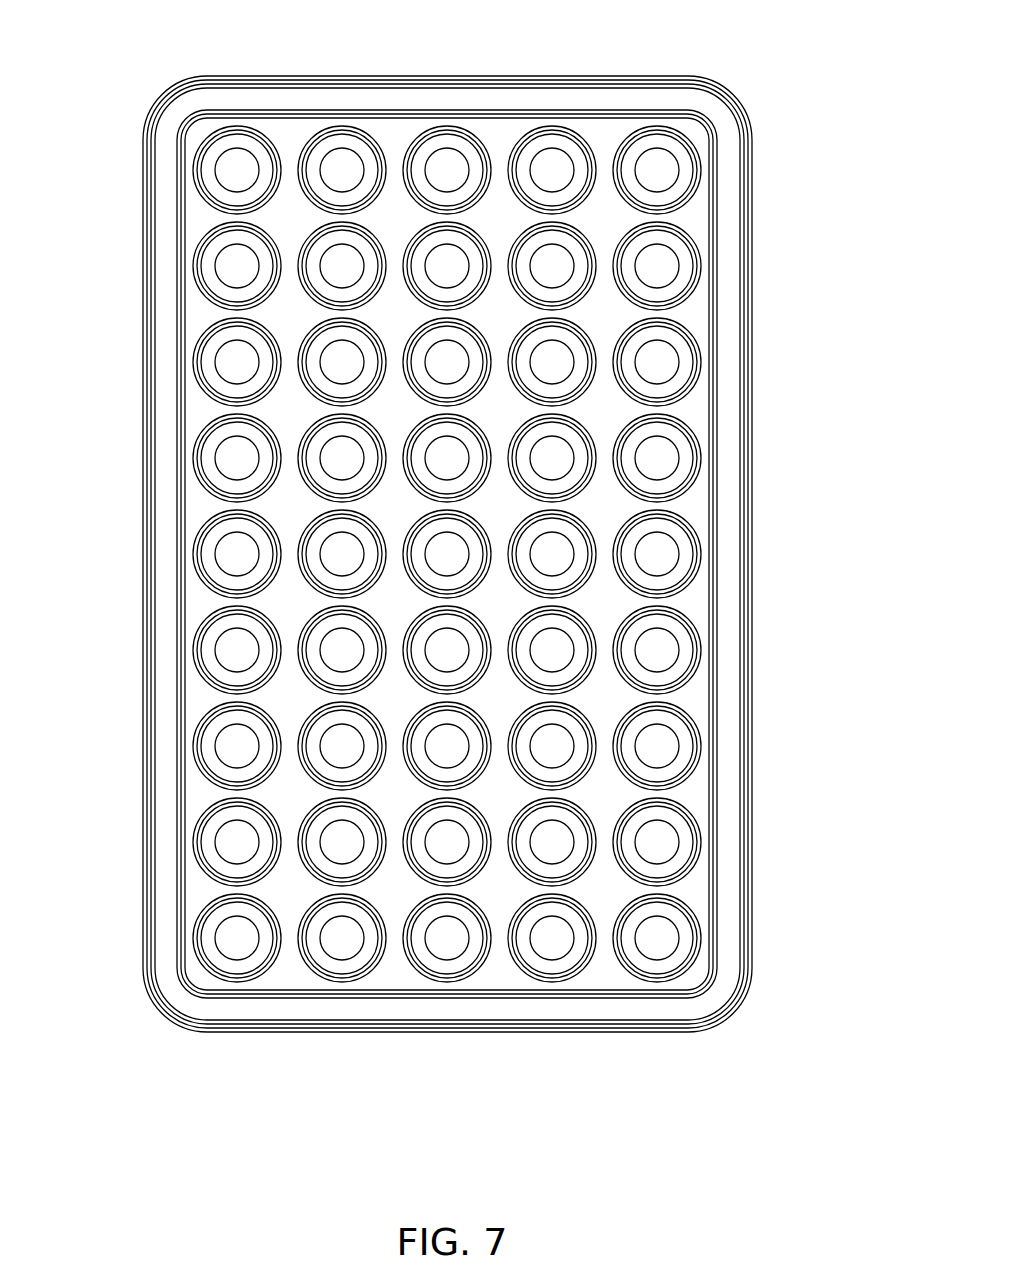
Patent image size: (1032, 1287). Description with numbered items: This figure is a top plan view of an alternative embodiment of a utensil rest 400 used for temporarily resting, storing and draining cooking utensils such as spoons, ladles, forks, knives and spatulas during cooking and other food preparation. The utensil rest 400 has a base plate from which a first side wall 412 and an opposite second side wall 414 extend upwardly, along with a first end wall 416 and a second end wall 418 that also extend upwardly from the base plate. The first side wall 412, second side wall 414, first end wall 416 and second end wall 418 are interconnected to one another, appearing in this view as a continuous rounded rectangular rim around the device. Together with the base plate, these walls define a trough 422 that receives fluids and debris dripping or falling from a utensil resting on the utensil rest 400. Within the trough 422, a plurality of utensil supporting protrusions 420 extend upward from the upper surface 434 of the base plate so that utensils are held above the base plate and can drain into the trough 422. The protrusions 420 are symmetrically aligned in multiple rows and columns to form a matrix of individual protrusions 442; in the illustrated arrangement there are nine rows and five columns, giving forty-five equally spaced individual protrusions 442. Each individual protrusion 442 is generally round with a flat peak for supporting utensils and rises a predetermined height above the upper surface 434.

The utensil rest 400 is at (473, 551).
The first side wall 412 is at (752, 396).
The second side wall 414 is at (143, 460).
The first end wall 416 is at (485, 76).
The second end wall 418 is at (525, 1033).
The utensil supporting protrusions 420 is at (452, 554).
The trough 422 is at (692, 214).
The upper surface 434 is at (603, 690).
The individual protrusions 442 is at (343, 126).